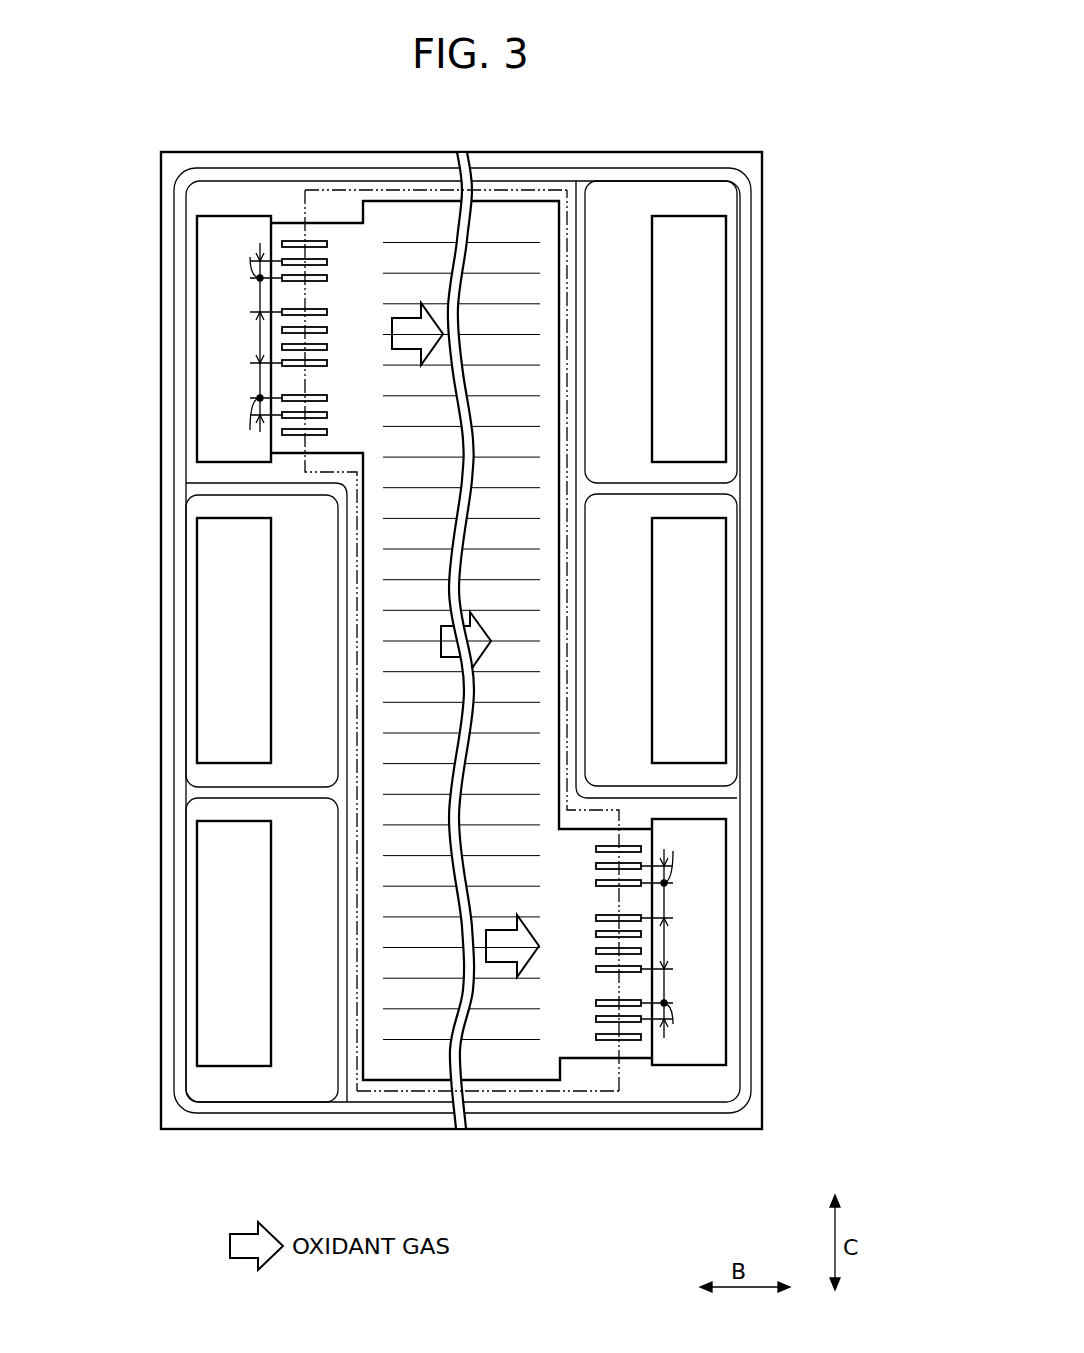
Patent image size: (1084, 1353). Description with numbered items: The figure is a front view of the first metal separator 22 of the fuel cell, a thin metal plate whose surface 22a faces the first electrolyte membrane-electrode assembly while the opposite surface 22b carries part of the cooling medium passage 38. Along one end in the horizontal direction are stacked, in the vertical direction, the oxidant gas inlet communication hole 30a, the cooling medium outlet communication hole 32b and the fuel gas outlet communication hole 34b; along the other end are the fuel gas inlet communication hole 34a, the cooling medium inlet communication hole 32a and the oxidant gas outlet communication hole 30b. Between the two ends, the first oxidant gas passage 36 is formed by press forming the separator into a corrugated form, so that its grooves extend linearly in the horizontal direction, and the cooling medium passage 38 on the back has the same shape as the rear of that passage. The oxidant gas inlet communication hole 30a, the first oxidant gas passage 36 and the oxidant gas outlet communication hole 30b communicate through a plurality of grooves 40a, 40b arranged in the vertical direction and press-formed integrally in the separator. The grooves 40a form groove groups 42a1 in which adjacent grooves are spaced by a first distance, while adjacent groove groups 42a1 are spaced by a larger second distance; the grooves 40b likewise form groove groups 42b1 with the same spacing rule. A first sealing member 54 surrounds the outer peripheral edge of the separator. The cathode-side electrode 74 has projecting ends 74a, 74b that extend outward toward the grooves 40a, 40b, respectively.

The first metal separator 22 is at (567, 97).
The surface 22a is at (208, 1122).
The surface 22b is at (277, 1118).
The oxidant gas inlet communication hole 30a is at (208, 305).
The oxidant gas outlet communication hole 30b is at (717, 960).
The cooling medium inlet communication hole 32a is at (703, 596).
The cooling medium outlet communication hole 32b is at (208, 607).
The fuel gas inlet communication hole 34a is at (715, 253).
The fuel gas outlet communication hole 34b is at (218, 912).
The first oxidant gas passage 36 is at (398, 662).
The cooling medium passage 38 is at (408, 621).
The grooves 40a is at (291, 242).
The grooves 40b is at (597, 850).
The groove groups 42a1 is at (351, 255).
The groove groups 42b1 is at (576, 911).
The first sealing member 54 is at (650, 153).
The cathode-side electrode 74 is at (415, 186).
The projecting end 74a is at (330, 448).
The projecting end 74b is at (591, 838).